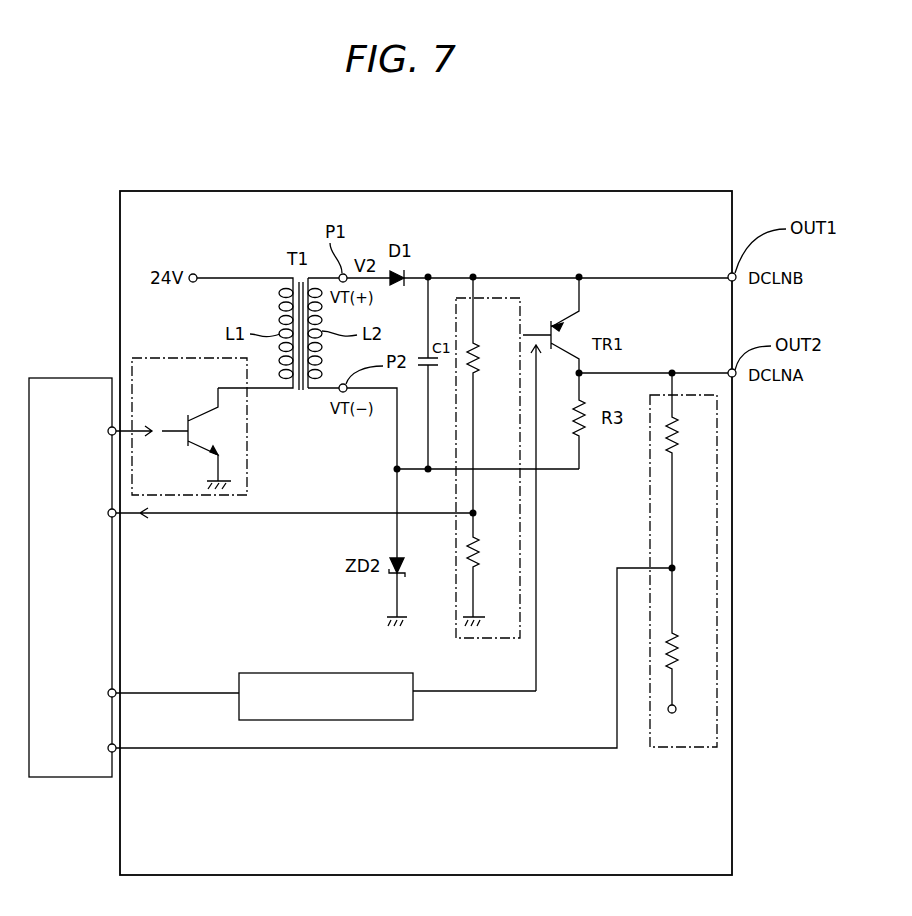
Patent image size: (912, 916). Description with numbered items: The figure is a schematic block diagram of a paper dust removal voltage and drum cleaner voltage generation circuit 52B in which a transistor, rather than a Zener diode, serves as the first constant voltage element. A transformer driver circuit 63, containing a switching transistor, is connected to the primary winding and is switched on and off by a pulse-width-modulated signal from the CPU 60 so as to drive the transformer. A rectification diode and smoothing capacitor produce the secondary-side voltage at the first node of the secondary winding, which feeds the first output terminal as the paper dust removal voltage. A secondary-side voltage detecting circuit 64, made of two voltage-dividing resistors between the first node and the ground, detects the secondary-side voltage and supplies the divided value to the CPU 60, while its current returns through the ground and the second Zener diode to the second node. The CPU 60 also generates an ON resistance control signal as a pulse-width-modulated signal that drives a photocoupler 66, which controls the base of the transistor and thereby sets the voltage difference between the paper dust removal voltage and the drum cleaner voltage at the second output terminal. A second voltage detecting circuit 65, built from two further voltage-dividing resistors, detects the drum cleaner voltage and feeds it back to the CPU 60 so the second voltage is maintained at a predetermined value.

The paper dust removal voltage and drum cleaner voltage generation circuit 52B is at (643, 191).
The CPU 60 is at (85, 378).
The transformer driver circuit 63 is at (142, 358).
The secondary-side voltage detecting circuit 64 is at (500, 298).
The second voltage detecting circuit 65 is at (650, 505).
The photocoupler 66 is at (300, 673).